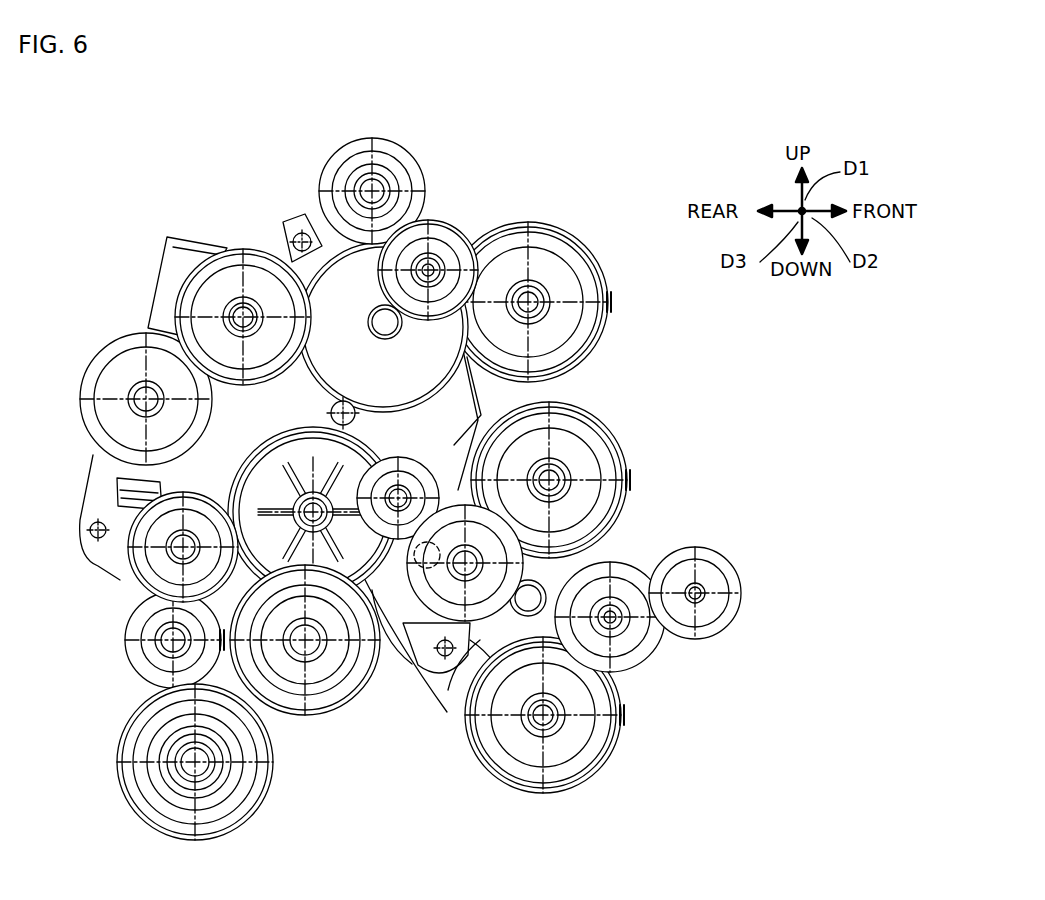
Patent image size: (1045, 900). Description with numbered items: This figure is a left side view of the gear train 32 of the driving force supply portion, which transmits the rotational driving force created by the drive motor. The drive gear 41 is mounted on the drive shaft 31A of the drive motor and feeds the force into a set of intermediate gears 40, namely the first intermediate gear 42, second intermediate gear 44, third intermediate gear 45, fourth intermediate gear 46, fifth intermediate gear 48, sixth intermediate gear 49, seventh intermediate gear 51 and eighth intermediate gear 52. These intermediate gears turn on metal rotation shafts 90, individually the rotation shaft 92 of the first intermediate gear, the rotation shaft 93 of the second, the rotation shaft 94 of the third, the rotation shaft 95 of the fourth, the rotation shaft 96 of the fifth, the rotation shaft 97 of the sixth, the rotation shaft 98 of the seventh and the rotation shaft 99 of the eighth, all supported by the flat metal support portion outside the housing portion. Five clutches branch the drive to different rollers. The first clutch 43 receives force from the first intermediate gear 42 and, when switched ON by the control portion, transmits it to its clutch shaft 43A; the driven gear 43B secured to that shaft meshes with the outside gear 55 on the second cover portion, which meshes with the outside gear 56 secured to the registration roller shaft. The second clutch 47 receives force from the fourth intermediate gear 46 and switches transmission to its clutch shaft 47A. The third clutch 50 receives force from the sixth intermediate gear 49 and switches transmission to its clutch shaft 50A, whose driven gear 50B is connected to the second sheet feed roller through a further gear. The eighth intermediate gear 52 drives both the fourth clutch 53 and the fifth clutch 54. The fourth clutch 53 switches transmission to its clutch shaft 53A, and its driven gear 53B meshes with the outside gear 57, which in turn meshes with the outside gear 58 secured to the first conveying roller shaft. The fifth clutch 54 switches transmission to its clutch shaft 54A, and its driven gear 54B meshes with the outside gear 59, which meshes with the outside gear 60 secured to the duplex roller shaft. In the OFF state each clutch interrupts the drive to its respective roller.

The gear train 32 is at (114, 173).
The drive shaft 31A is at (286, 412).
The drive gear 41 is at (331, 413).
The intermediate gears 40 is at (282, 430).
The first intermediate gear 42 is at (337, 250).
The second intermediate gear 44 is at (243, 249).
The third intermediate gear 45 is at (135, 337).
The fourth intermediate gear 46 is at (243, 462).
The fifth intermediate gear 48 is at (130, 570).
The sixth intermediate gear 49 is at (128, 672).
The seventh intermediate gear 51 is at (398, 622).
The eighth intermediate gear 52 is at (480, 657).
The first clutch 43 is at (551, 273).
The clutch shaft 43A is at (548, 310).
The driven gear 43B is at (585, 270).
The second clutch 47 is at (305, 663).
The clutch shaft 47A is at (314, 662).
The third clutch 50 is at (189, 773).
The clutch shaft 50A is at (215, 768).
The driven gear 50B is at (233, 800).
The fourth clutch 53 is at (576, 461).
The clutch shaft 53A is at (560, 485).
The driven gear 53B is at (623, 465).
The fifth clutch 54 is at (557, 730).
The clutch shaft 54A is at (527, 727).
The driven gear 54B is at (578, 765).
The outside gear 55 is at (460, 217).
The outside gear 56 is at (327, 157).
The outside gear 57 is at (400, 593).
The outside gear 58 is at (360, 483).
The outside gear 59 is at (650, 660).
The outside gear 60 is at (698, 548).
The rotation shafts 90 is at (345, 447).
The rotation shaft 92 is at (385, 343).
The rotation shaft 93 is at (233, 303).
The rotation shaft 94 is at (135, 393).
The rotation shaft 95 is at (303, 518).
The rotation shaft 96 is at (170, 540).
The rotation shaft 97 is at (160, 640).
The rotation shaft 98 is at (402, 490).
The rotation shaft 99 is at (537, 598).